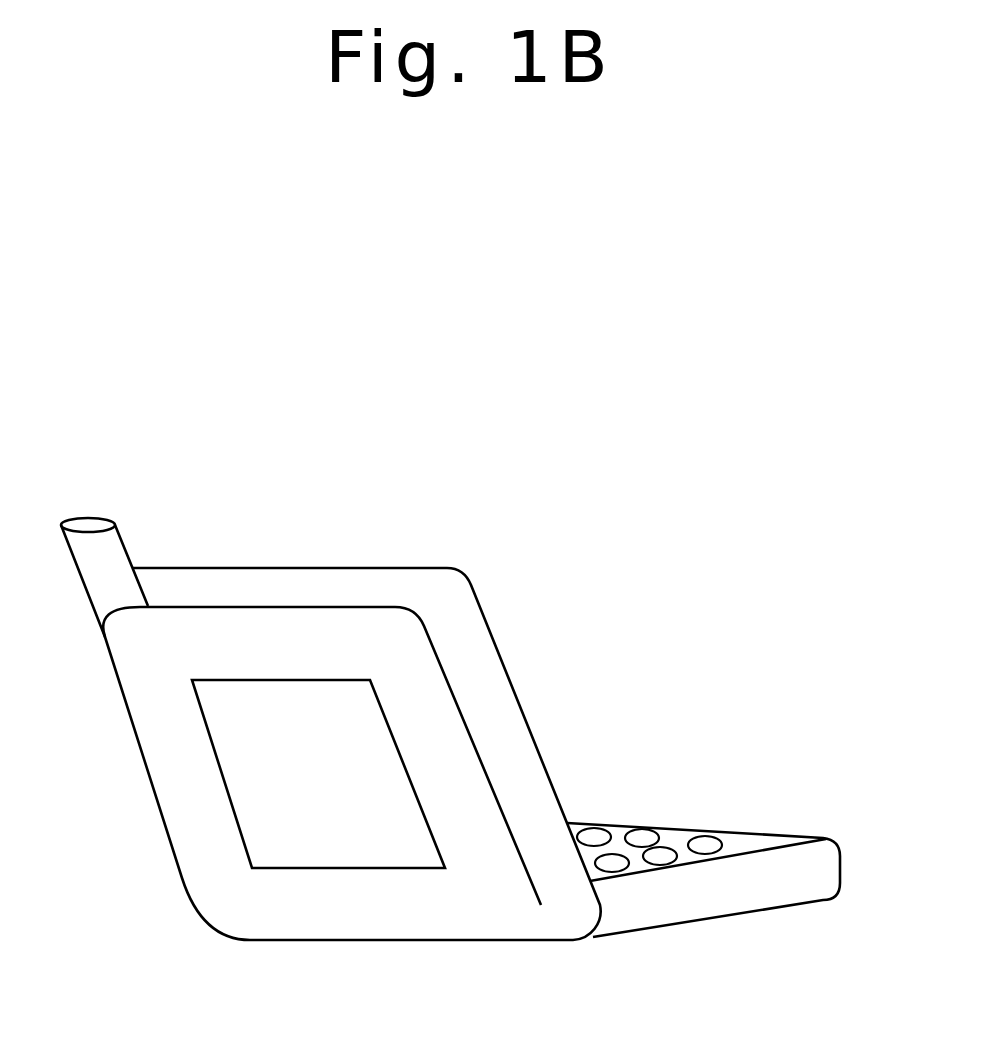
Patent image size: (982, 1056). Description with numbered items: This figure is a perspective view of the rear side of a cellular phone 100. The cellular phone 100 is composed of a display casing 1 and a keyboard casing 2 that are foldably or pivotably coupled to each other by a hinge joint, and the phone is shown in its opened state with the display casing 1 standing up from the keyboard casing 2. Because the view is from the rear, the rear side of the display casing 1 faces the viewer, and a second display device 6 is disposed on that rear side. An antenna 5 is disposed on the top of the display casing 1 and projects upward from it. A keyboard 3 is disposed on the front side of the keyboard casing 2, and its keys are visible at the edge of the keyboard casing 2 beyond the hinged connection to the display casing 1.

The cellular phone 100 is at (673, 607).
The display casing 1 is at (483, 673).
The keyboard casing 2 is at (737, 895).
The keyboard 3 is at (742, 835).
The antenna 5 is at (110, 560).
The second display device 6 is at (253, 768).